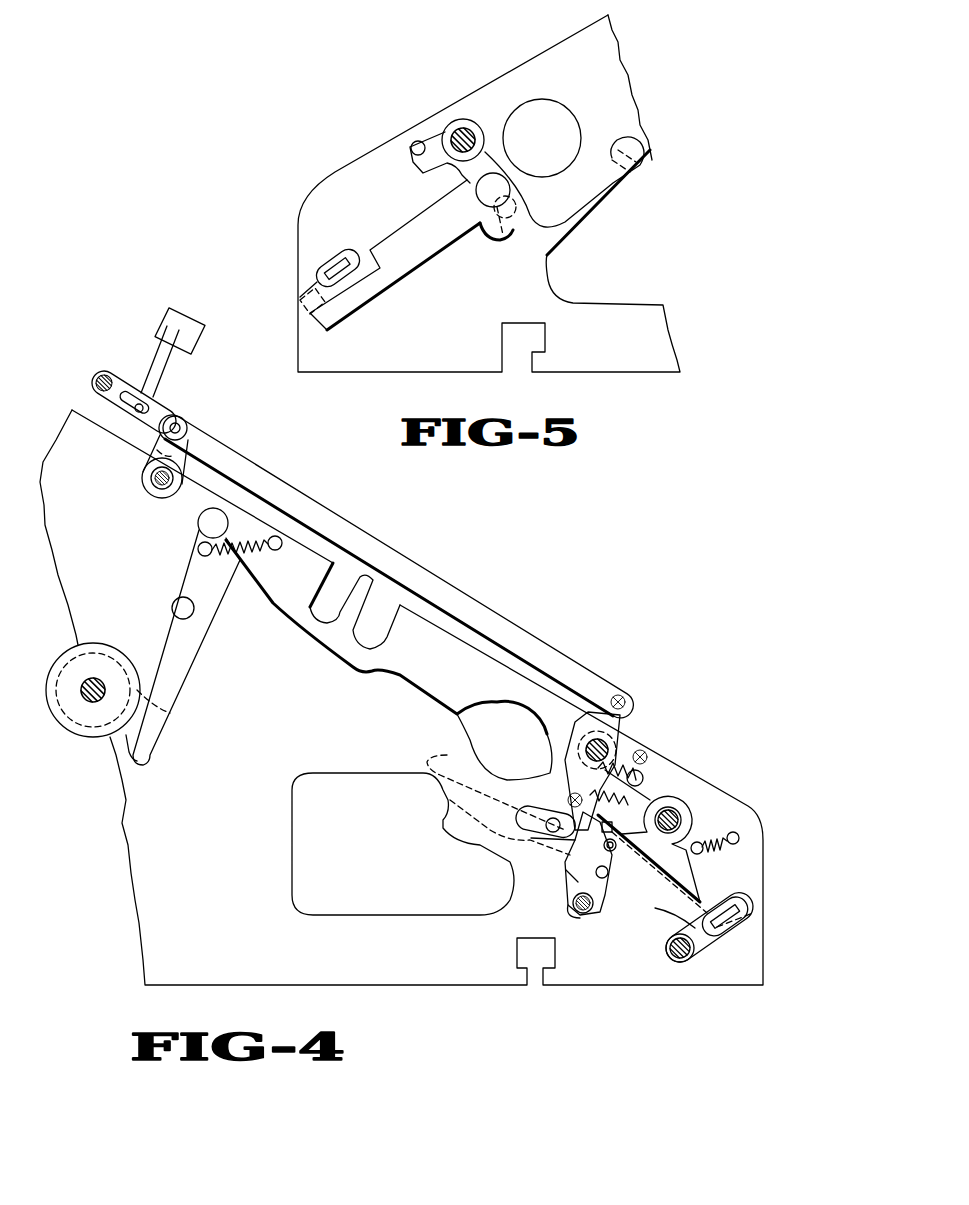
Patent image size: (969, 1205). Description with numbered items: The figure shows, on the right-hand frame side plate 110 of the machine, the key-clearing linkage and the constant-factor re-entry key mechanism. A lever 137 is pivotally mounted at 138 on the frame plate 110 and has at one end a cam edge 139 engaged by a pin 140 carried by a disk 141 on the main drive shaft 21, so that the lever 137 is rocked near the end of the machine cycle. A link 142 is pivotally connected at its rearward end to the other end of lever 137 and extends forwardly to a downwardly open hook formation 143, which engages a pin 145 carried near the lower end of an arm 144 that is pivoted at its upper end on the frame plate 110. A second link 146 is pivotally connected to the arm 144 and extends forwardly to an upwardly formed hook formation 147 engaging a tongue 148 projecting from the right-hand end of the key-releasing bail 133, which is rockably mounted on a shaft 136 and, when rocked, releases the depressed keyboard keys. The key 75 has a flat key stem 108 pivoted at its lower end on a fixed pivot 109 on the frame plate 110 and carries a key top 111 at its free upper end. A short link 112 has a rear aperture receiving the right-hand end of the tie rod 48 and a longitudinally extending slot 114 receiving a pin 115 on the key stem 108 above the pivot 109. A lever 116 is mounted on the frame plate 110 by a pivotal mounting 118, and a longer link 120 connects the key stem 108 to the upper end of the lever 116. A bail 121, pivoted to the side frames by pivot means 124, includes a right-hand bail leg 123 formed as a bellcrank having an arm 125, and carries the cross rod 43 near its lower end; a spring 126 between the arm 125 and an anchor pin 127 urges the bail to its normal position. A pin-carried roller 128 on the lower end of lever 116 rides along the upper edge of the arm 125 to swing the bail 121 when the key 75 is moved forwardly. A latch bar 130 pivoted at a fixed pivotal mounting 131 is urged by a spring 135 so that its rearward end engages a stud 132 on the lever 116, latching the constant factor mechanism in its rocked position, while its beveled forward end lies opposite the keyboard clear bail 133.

In FIG. 5, the frame side plate 110 is at (298, 242).
In FIG. 4, the frame side plate 110 is at (128, 845).
In FIG. 5, the second link 146 is at (415, 228).
In FIG. 5, the arm 144 is at (467, 177).
In FIG. 4, the arm 144 is at (551, 838).
In FIG. 5, the pin 145 is at (508, 233).
In FIG. 4, the pin 145 is at (547, 824).
In FIG. 5, the tongue 148 is at (312, 282).
In FIG. 5, the hook formation 147 is at (322, 311).
In FIG. 4, the link 120 is at (382, 534).
In FIG. 4, the lever 116 is at (603, 713).
In FIG. 4, the pin 115 is at (177, 418).
In FIG. 4, the short link 112 is at (96, 395).
In FIG. 4, the slot 114 is at (130, 420).
In FIG. 4, the tie rod 48 is at (100, 380).
In FIG. 4, the key 75 is at (160, 343).
In FIG. 4, the key top 111 is at (163, 333).
In FIG. 4, the key stem 108 is at (152, 455).
In FIG. 4, the fixed pivot 109 is at (155, 484).
In FIG. 4, the lever 137 is at (184, 565).
In FIG. 4, the pivotal mounting 138 is at (172, 608).
In FIG. 4, the link 142 is at (315, 635).
In FIG. 4, the disk 141 is at (60, 651).
In FIG. 4, the main drive shaft 21 is at (80, 690).
In FIG. 4, the pin 140 is at (170, 712).
In FIG. 4, the cam edge 139 is at (128, 748).
In FIG. 4, the pivotal mounting 118 is at (592, 745).
In FIG. 4, the hook formation 143 is at (553, 793).
In FIG. 4, the arm 125 is at (590, 853).
In FIG. 4, the roller 128 is at (615, 873).
In FIG. 4, the pivot means 124 is at (598, 875).
In FIG. 4, the right-hand bail leg 123 is at (580, 877).
In FIG. 4, the bail 121 is at (570, 913).
In FIG. 4, the rod 43 is at (584, 912).
In FIG. 4, the spring 126 is at (626, 746).
In FIG. 4, the anchor pin 127 is at (642, 777).
In FIG. 4, the stud 132 is at (612, 823).
In FIG. 4, the fixed pivotal mounting 131 is at (673, 812).
In FIG. 4, the latch bar 130 is at (703, 828).
In FIG. 4, the spring 135 is at (718, 858).
In FIG. 4, the key-releasing bail 133 is at (677, 910).
In FIG. 4, the shaft 136 is at (673, 940).